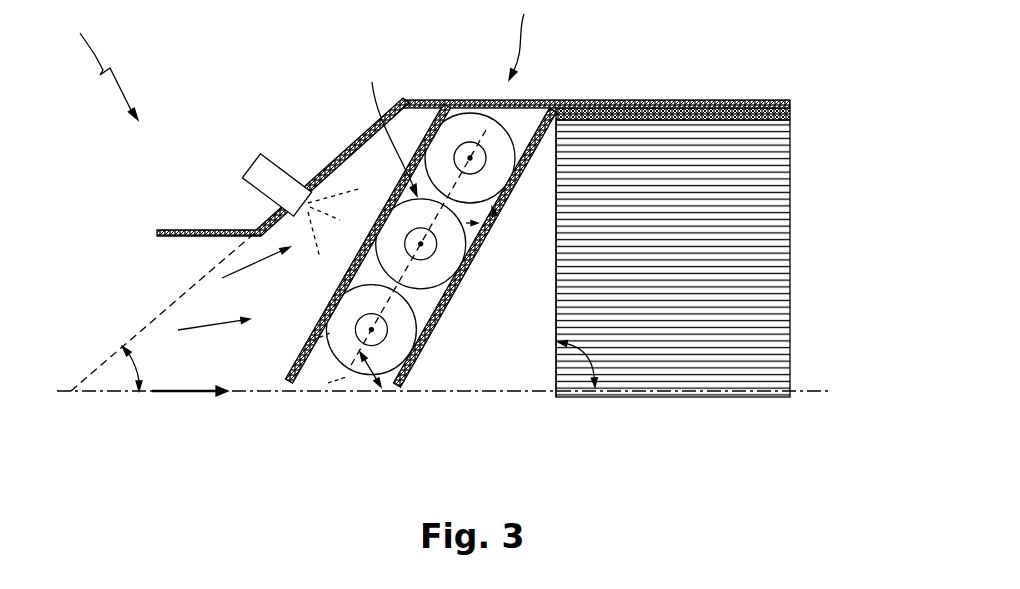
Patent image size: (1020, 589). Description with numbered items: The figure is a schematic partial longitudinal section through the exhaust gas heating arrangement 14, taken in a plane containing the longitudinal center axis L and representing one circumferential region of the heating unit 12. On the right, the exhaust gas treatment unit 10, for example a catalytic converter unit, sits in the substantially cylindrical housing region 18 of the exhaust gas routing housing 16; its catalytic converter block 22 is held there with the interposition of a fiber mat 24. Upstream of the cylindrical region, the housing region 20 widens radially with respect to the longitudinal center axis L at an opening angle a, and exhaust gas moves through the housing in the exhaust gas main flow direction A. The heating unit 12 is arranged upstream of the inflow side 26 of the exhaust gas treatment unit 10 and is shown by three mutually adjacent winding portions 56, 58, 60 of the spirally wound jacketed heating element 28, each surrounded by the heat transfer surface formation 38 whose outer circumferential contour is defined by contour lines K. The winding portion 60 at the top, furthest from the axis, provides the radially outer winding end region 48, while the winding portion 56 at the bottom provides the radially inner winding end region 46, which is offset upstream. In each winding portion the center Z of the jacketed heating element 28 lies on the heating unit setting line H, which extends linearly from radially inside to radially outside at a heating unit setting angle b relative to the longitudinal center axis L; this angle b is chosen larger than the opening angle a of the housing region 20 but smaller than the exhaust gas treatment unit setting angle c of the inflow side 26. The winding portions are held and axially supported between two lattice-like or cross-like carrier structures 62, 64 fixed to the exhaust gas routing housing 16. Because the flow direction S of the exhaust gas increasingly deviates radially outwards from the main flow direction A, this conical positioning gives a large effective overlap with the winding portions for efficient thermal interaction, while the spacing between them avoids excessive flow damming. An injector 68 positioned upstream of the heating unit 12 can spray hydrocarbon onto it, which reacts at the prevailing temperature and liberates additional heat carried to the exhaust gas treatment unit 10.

The exhaust gas treatment unit 10 is at (790, 313).
The heating unit 12 is at (426, 196).
The exhaust gas heating arrangement 14 is at (95, 70).
The exhaust gas routing housing 16 is at (728, 100).
The substantially cylindrical housing region 18 is at (667, 100).
The housing region 20 is at (325, 166).
The catalytic converter block 22 is at (763, 224).
The fiber mat 24 is at (773, 113).
The inflow side 26 is at (556, 368).
The jacketed heating element 28 is at (483, 147).
The heat transfer surface formation 38 is at (394, 376).
The radially inner winding end region 46 is at (308, 340).
The radially outer winding end region 48 is at (447, 104).
The winding portion 56 is at (425, 338).
The winding portion 58 is at (480, 242).
The winding portion 60 is at (496, 216).
The carrier structure 62 is at (270, 380).
The carrier structure 64 is at (412, 362).
The injector 68 is at (251, 163).
The contour lines K is at (390, 126).
The center Z is at (470, 150).
The flow direction S is at (228, 277).
The opening angle a is at (132, 375).
The exhaust gas main flow direction A is at (181, 394).
The heating unit setting line H is at (340, 380).
The heating unit setting angle b is at (371, 380).
The exhaust gas treatment unit setting angle c is at (583, 364).
The longitudinal center axis L is at (812, 392).